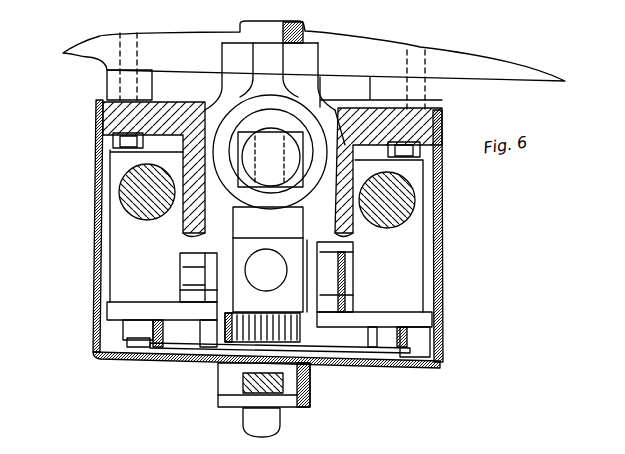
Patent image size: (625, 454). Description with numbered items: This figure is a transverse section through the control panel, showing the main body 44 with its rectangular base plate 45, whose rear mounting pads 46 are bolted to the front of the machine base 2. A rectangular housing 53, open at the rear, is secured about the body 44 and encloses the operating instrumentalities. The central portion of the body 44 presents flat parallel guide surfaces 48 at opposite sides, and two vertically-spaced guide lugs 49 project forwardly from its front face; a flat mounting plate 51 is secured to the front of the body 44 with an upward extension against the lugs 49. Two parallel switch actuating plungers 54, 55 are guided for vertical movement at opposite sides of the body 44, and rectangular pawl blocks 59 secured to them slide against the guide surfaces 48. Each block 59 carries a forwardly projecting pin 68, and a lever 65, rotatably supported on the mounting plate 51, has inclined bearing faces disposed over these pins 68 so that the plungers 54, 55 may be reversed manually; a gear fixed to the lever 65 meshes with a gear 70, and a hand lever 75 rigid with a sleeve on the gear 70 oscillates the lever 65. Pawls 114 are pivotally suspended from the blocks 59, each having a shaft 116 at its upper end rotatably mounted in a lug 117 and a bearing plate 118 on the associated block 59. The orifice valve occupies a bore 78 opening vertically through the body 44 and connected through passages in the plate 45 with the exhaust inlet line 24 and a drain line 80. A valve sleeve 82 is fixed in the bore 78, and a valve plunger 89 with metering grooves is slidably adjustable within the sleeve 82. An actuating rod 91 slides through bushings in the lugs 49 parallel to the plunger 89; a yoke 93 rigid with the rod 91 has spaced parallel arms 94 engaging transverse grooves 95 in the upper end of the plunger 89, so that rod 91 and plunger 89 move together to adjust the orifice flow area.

The base 2 is at (522, 70).
The exhaust inlet line 24 is at (236, 43).
The drain line 80 is at (263, 40).
The base plate 45 is at (110, 116).
The mounting pads 46 is at (443, 95).
The housing 53 is at (442, 240).
The switch actuating plunger 54 is at (128, 190).
The switch actuating plunger 55 is at (421, 194).
The pawl blocks 59 is at (118, 218).
The guide surfaces 48 is at (183, 210).
The lug 117 is at (197, 247).
The pawls 114 is at (197, 266).
The shaft 116 is at (195, 280).
The guide lugs 49 is at (186, 292).
The bearing plate 118 is at (118, 313).
The pins 68 is at (135, 330).
The lever 65 is at (150, 347).
The gear 70 is at (222, 342).
The hand lever 75 is at (243, 382).
The mounting plate 51 is at (297, 315).
The valve sleeve 82 is at (241, 128).
The valve plunger 89 is at (316, 132).
The bore 78 is at (302, 115).
The arms 94 is at (298, 137).
The transverse grooves 95 is at (270, 259).
The yoke 93 is at (299, 236).
The main body 44 is at (303, 217).
The actuating rod 91 is at (267, 252).